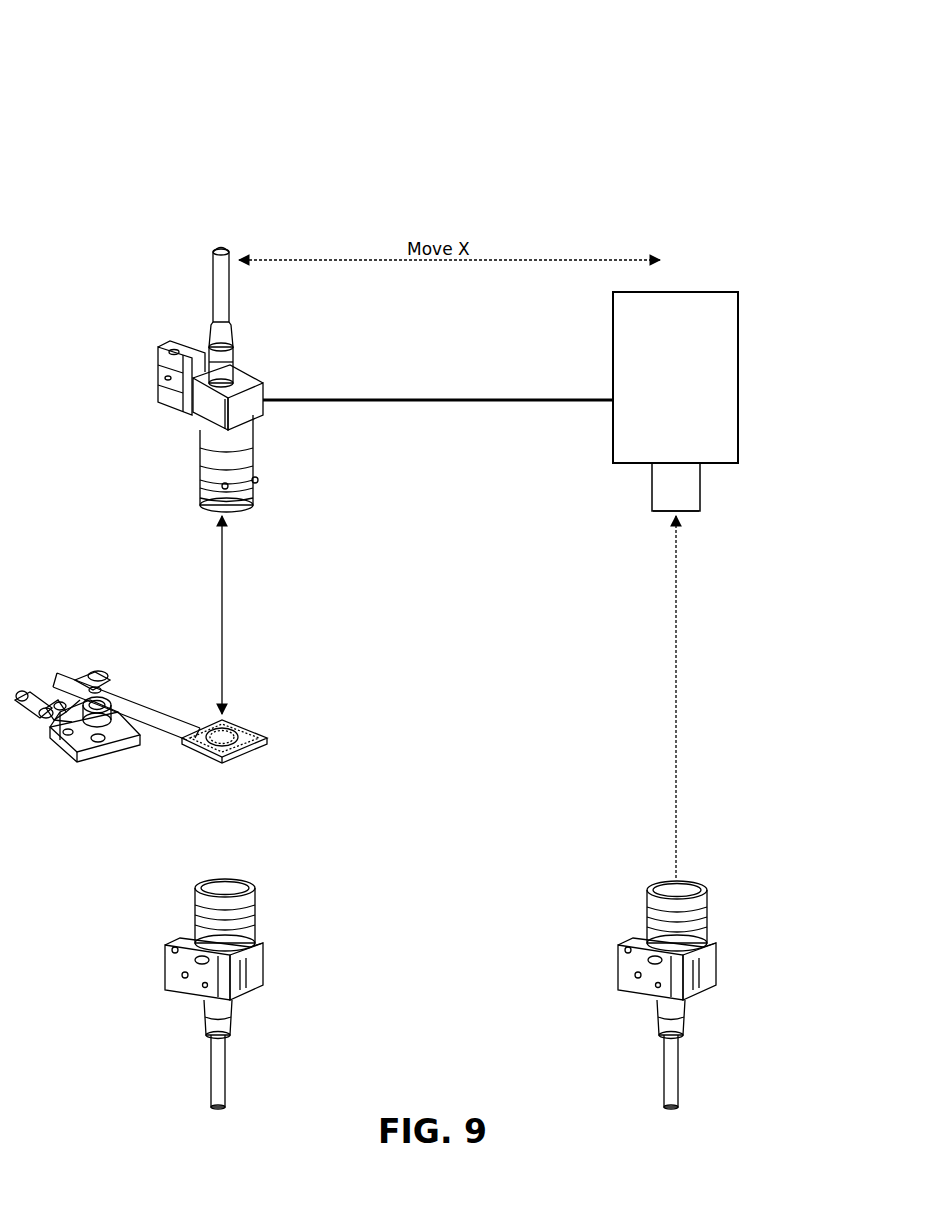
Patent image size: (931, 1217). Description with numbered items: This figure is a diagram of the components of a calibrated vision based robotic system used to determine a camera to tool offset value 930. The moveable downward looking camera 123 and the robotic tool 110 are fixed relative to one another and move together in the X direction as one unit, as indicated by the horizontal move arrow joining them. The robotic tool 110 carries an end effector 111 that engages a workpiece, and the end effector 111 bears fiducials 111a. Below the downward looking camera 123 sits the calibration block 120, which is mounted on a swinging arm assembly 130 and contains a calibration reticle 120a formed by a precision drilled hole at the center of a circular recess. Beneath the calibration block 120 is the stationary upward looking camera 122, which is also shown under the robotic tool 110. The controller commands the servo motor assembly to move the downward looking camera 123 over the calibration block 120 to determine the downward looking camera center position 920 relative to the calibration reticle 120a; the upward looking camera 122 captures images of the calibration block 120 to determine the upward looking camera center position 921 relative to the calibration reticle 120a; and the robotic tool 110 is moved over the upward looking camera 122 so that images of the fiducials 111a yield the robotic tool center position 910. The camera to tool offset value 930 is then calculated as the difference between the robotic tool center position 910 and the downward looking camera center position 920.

The robotic tool 110 is at (742, 340).
The end effector 111 is at (712, 481).
The fiducials 111a is at (688, 516).
The calibration block 120 is at (250, 757).
The calibration reticle 120a is at (228, 732).
The upward looking camera 122 is at (158, 965).
The downward looking camera 123 is at (158, 402).
The swinging arm assembly 130 is at (160, 715).
The robotic tool center position 910 is at (678, 290).
The downward looking camera center position 920 is at (223, 228).
The upward looking camera center position 921 is at (223, 781).
The camera to tool offset value 930 is at (676, 33).